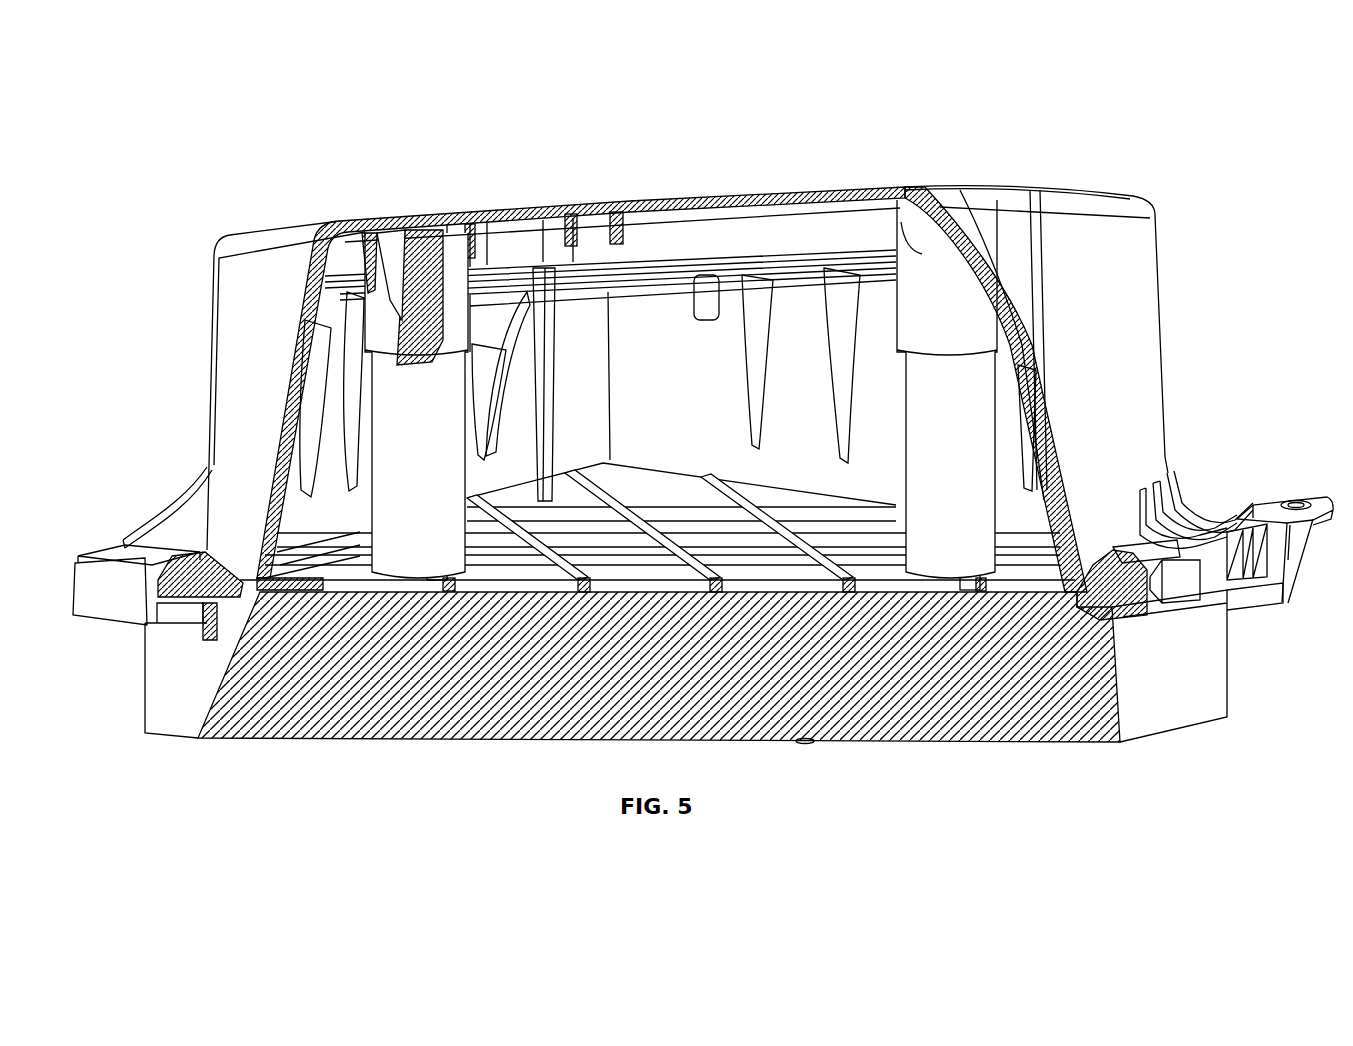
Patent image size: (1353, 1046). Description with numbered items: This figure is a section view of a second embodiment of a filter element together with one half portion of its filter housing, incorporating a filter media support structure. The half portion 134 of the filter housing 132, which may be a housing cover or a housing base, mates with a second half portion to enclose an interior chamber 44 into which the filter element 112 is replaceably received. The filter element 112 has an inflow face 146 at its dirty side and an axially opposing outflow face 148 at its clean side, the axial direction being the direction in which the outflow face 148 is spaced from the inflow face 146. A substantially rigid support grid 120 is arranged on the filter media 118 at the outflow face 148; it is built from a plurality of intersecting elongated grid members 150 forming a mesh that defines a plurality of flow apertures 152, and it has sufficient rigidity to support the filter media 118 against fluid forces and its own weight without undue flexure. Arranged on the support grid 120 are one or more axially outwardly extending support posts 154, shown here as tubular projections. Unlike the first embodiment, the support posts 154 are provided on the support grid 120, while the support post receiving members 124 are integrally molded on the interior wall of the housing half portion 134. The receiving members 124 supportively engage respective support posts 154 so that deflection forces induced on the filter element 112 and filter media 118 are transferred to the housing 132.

The interior chamber 44 is at (599, 305).
The filter element 112 is at (1202, 658).
The filter media 118 is at (1033, 688).
The support grid 120 is at (493, 575).
The support post receiving member 124 is at (490, 243).
The filter housing 132 is at (1151, 292).
The half portion of the filter housing 134 is at (1083, 195).
The inflow face 146 is at (838, 742).
The outflow face 148 is at (755, 580).
The elongated grid member 150 is at (693, 577).
The flow aperture 152 is at (895, 582).
The support post 154 is at (975, 496).